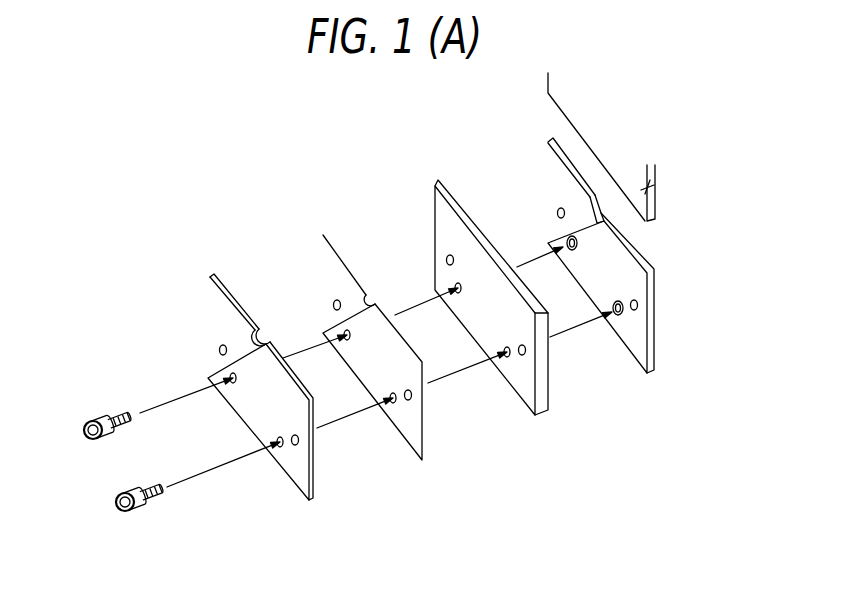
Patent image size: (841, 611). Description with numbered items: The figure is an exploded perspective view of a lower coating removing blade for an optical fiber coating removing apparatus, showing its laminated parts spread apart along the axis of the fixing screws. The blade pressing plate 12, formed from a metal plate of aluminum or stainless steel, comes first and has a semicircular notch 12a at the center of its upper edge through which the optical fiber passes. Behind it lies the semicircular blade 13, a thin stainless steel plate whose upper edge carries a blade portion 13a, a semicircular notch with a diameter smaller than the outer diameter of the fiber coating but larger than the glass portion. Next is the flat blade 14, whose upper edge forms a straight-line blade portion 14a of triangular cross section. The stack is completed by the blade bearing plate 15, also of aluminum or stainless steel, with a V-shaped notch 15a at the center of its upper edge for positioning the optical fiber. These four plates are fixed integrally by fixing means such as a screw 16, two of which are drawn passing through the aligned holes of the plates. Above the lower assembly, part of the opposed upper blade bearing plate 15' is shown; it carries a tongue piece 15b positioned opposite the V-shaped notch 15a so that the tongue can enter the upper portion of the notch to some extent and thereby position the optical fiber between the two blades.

The blade pressing plate 12 is at (260, 408).
The semicircular notch 12a is at (262, 340).
The semicircular blade 13 is at (372, 367).
The blade portion 13a is at (372, 298).
The flat blade 14 is at (491, 318).
The straight-line blade portion 14a is at (482, 228).
The blade bearing plate 15 is at (630, 255).
The V-shaped notch 15a is at (627, 233).
The tongue piece 15b is at (602, 170).
The blade bearing plate 15' is at (674, 193).
The screw 16 is at (115, 503).